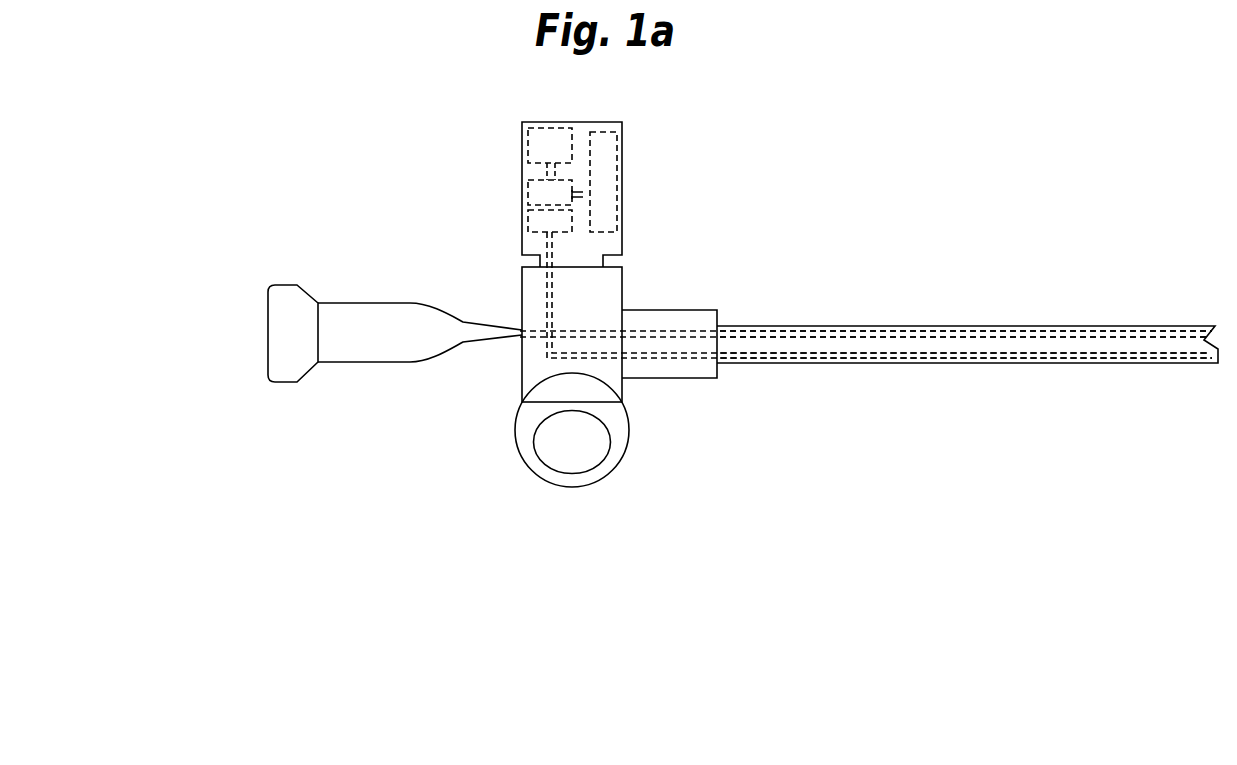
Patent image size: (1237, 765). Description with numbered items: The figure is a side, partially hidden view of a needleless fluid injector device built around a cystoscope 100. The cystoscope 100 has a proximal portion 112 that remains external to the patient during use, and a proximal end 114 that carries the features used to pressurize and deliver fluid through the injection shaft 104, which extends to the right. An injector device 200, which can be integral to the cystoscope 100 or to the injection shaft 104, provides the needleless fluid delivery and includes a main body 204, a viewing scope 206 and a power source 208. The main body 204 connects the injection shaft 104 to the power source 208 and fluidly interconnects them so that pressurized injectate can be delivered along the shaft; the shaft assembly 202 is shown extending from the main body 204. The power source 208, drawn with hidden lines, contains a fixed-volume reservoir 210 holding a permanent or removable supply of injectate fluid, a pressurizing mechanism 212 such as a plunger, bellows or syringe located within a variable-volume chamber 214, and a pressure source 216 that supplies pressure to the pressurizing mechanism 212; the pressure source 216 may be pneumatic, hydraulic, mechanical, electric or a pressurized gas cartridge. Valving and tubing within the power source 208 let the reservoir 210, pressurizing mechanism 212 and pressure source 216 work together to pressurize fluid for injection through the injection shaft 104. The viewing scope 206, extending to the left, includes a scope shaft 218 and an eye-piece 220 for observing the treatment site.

The cystoscope 100 is at (852, 364).
The injection shaft 104 is at (1038, 350).
The proximal portion 112 is at (666, 468).
The proximal end 114 is at (717, 380).
The injector device 200 is at (866, 117).
The catheter assembly 202 is at (1015, 309).
The main body 204 is at (623, 280).
The viewing scope 206 is at (350, 365).
The power source 208 is at (624, 122).
The fixed-volume reservoir 210 is at (612, 185).
The pressurizing mechanism 212 is at (543, 202).
The variable-volume chamber 214 is at (528, 227).
The pressure source 216 is at (558, 124).
The scope shaft 218 is at (1152, 348).
The eye-piece 220 is at (268, 353).